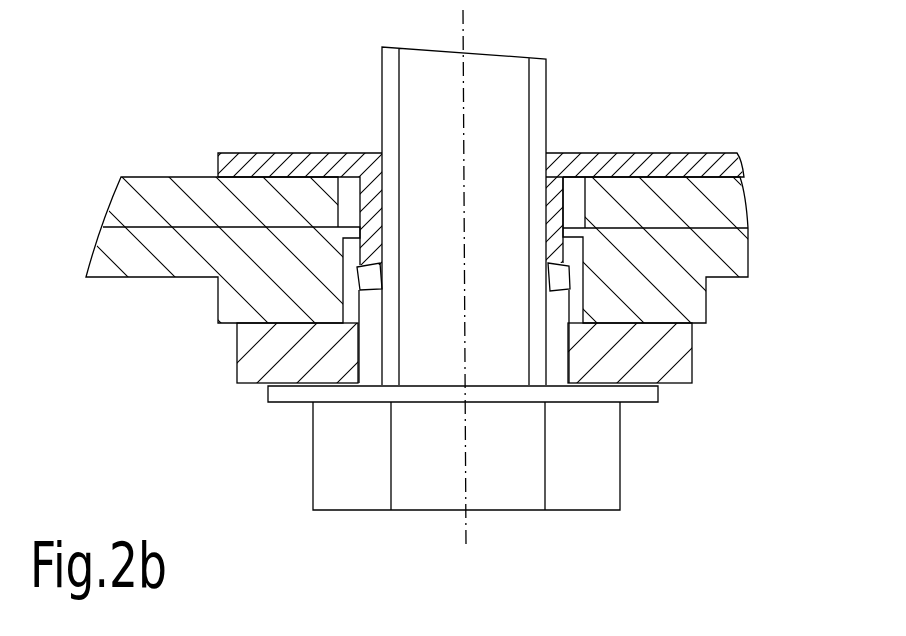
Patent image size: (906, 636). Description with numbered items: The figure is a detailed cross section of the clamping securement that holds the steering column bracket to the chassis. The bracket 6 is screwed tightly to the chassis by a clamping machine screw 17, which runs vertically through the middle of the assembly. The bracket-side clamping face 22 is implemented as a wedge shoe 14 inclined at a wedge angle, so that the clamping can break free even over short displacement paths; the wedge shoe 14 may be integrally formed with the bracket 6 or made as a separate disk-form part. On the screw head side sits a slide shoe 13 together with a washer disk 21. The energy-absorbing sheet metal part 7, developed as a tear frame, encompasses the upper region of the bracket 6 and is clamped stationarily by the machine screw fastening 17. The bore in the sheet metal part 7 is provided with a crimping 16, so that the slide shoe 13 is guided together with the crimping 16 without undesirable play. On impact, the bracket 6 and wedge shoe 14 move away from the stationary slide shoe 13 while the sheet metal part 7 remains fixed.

The bracket 6 is at (453, 223).
The sheet metal part 7 is at (453, 223).
The slide shoe 13 is at (453, 303).
The wedge shoe 14 is at (453, 270).
The crimping 16 is at (494, 424).
The clamping machine screw 17 is at (510, 199).
The washer disk 21 is at (499, 437).
The bracket-side clamping face 22 is at (453, 316).